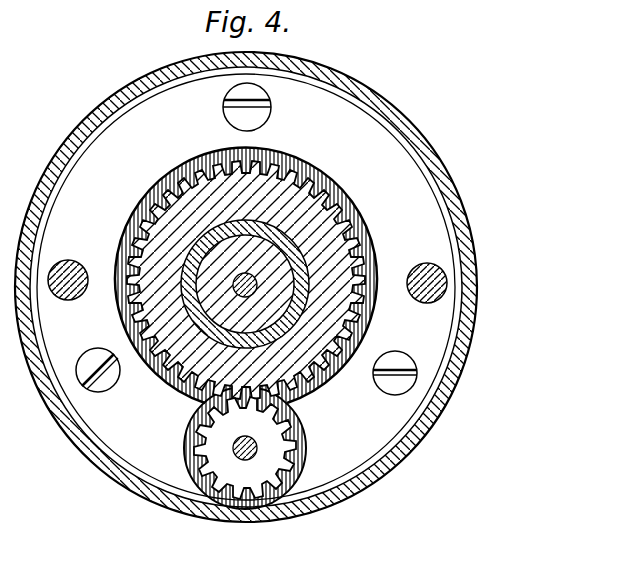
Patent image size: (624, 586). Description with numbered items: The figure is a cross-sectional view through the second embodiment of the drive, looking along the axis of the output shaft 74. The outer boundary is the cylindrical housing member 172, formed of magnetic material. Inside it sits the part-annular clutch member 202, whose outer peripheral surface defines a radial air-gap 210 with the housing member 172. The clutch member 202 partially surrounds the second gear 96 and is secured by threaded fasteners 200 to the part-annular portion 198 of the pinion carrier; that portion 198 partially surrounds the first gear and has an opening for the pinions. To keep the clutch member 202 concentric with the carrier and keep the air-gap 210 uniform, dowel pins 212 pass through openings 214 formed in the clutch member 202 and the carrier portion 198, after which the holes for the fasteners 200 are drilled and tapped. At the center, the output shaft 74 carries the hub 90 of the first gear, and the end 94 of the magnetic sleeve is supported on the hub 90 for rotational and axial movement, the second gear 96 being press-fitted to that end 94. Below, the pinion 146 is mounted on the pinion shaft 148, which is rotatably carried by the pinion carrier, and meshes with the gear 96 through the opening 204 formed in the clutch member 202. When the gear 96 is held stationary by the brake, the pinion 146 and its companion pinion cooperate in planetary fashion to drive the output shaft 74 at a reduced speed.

The output shaft 74 is at (245, 273).
The hub 90 is at (275, 300).
The end of sleeve 94 is at (298, 270).
The second gear 96 is at (187, 226).
The pinion 146 is at (257, 470).
The pinion shaft 148 is at (238, 458).
The cylindrical housing member 172 is at (455, 393).
The part-annular portion 198 is at (320, 178).
The threaded fasteners 200 is at (270, 97).
The part-annular clutch member 202 is at (418, 185).
The opening 204 is at (305, 450).
The radial air-gap 210 is at (403, 137).
The dowel pins 212 is at (438, 287).
The openings 214 is at (441, 266).